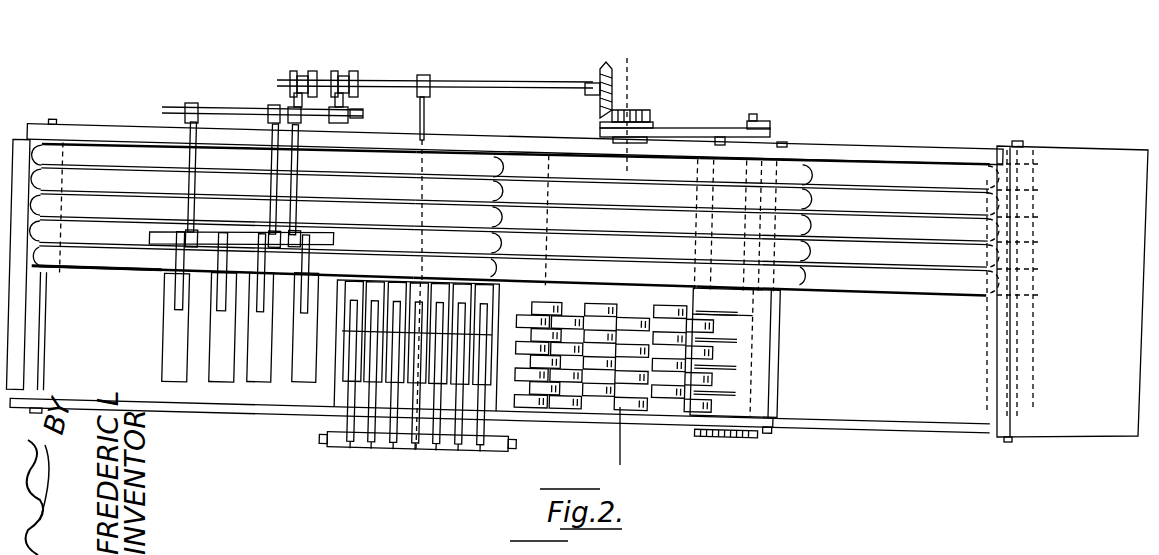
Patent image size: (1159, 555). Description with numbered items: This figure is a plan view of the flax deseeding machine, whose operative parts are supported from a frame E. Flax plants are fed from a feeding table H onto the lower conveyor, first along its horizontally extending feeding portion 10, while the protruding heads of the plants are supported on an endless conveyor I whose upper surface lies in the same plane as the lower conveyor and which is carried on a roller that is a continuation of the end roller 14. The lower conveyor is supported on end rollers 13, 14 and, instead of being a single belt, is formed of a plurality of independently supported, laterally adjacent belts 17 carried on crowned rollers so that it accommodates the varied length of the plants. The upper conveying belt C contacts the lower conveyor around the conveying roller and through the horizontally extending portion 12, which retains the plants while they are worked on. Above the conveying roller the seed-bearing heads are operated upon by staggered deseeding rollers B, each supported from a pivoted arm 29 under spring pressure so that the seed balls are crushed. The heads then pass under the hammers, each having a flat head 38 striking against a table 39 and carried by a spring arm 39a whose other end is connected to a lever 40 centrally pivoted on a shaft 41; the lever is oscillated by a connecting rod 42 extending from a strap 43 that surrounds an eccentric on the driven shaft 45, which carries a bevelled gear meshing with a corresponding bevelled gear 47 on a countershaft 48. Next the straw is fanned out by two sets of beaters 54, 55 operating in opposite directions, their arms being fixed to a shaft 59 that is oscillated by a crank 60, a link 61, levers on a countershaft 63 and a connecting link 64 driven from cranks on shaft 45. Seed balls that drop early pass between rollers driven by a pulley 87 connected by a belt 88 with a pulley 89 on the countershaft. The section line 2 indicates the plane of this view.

The section line 2- 2 is at (630, 261).
The feeding portion 10 is at (978, 286).
The horizontally extending portion 12 is at (122, 180).
The end roller 13 is at (137, 270).
The end roller 14 is at (1030, 266).
The independently supported belts 17 is at (880, 170).
The pivoted arm 29 is at (729, 388).
The flat head 38 is at (443, 284).
The table 39 is at (492, 408).
The spring arm 39a is at (430, 441).
The lever 40 is at (600, 65).
The shaft 41 is at (512, 441).
The connecting rod 42 is at (420, 118).
The strap 43 is at (432, 78).
The shaft 45 is at (505, 84).
The bevelled gear 47 is at (641, 112).
The countershaft 48 is at (656, 126).
The beaters 54 is at (305, 380).
The beaters 55 is at (261, 386).
The shaft 59 is at (322, 242).
The crank 60 is at (258, 232).
The link 61 is at (272, 152).
The shaft 63 is at (210, 106).
The connecting link 64 is at (345, 72).
The pulley 87 is at (762, 126).
The belt 88 is at (724, 128).
The pulley 89 is at (606, 128).
The deseeding rollers B is at (600, 394).
The conveying belt C is at (452, 190).
The frame E is at (678, 430).
The feeding table H is at (1070, 418).
The endless conveyor I is at (916, 398).